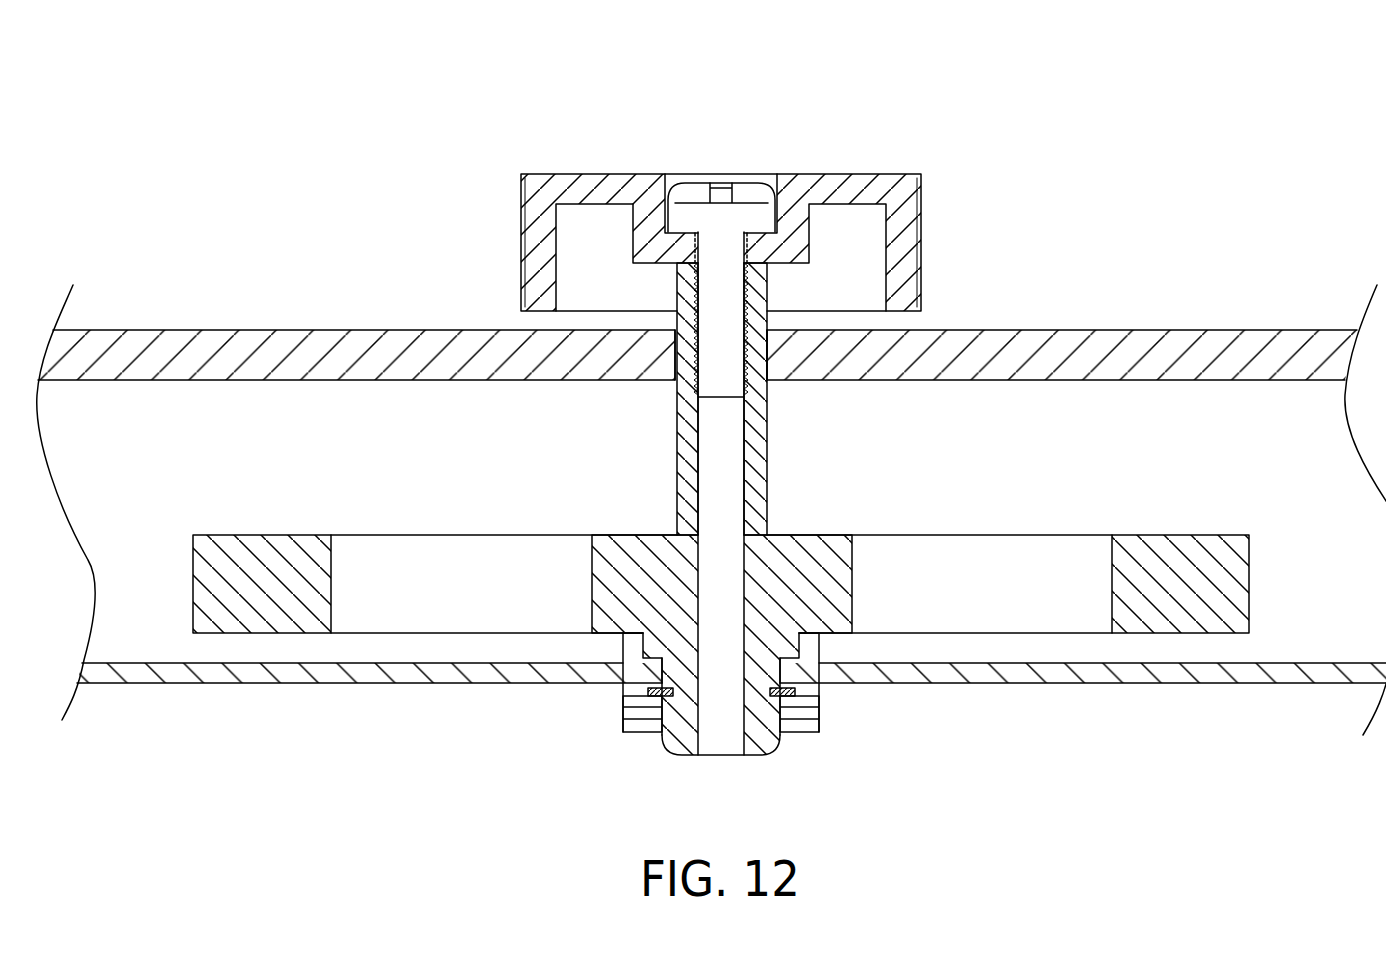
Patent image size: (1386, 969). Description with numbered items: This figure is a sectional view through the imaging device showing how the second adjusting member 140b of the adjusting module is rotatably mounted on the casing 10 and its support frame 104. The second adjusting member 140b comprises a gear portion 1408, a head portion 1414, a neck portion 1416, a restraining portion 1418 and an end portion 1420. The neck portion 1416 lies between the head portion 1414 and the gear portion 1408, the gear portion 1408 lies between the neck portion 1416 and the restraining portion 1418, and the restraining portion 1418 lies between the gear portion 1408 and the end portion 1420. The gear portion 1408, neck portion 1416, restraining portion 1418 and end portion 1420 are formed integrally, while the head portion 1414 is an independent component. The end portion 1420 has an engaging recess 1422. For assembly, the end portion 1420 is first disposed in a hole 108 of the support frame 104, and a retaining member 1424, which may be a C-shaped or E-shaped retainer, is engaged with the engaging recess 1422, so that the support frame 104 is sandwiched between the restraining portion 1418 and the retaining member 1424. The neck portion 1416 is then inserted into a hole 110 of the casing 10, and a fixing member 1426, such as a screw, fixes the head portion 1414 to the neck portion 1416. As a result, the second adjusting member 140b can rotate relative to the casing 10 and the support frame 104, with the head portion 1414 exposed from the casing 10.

The casing 10 is at (1174, 330).
The support frame 104 is at (1177, 684).
The hole 108 is at (782, 670).
The hole 110 is at (770, 352).
The second adjusting member 140b is at (896, 140).
The gear portion 1408 is at (1179, 535).
The head portion 1414 is at (922, 207).
The neck portion 1416 is at (768, 443).
The restraining portion 1418 is at (800, 648).
The end portion 1420 is at (760, 757).
The engaging recess 1422 is at (650, 693).
The retaining member 1424 is at (648, 690).
The fixing member 1426 is at (748, 175).